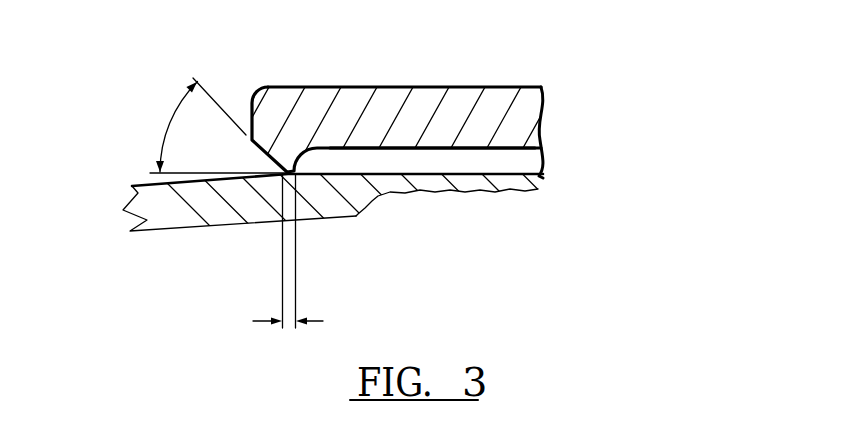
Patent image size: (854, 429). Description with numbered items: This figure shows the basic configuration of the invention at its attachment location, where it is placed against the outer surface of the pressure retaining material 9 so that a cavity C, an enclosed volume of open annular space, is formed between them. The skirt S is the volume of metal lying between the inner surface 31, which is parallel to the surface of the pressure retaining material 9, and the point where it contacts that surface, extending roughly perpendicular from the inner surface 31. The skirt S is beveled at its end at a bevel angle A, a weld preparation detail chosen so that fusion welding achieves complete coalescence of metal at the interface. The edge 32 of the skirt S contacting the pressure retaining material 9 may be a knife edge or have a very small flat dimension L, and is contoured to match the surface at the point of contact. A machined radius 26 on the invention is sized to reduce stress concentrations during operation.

The radius element 26 is at (353, 147).
The pressure retaining material 9 is at (213, 222).
The inner surface 31 is at (508, 150).
The edge 32 is at (296, 205).
The angle A is at (167, 128).
The skirt S is at (252, 157).
The cavity C is at (447, 168).
The dimension L is at (290, 317).